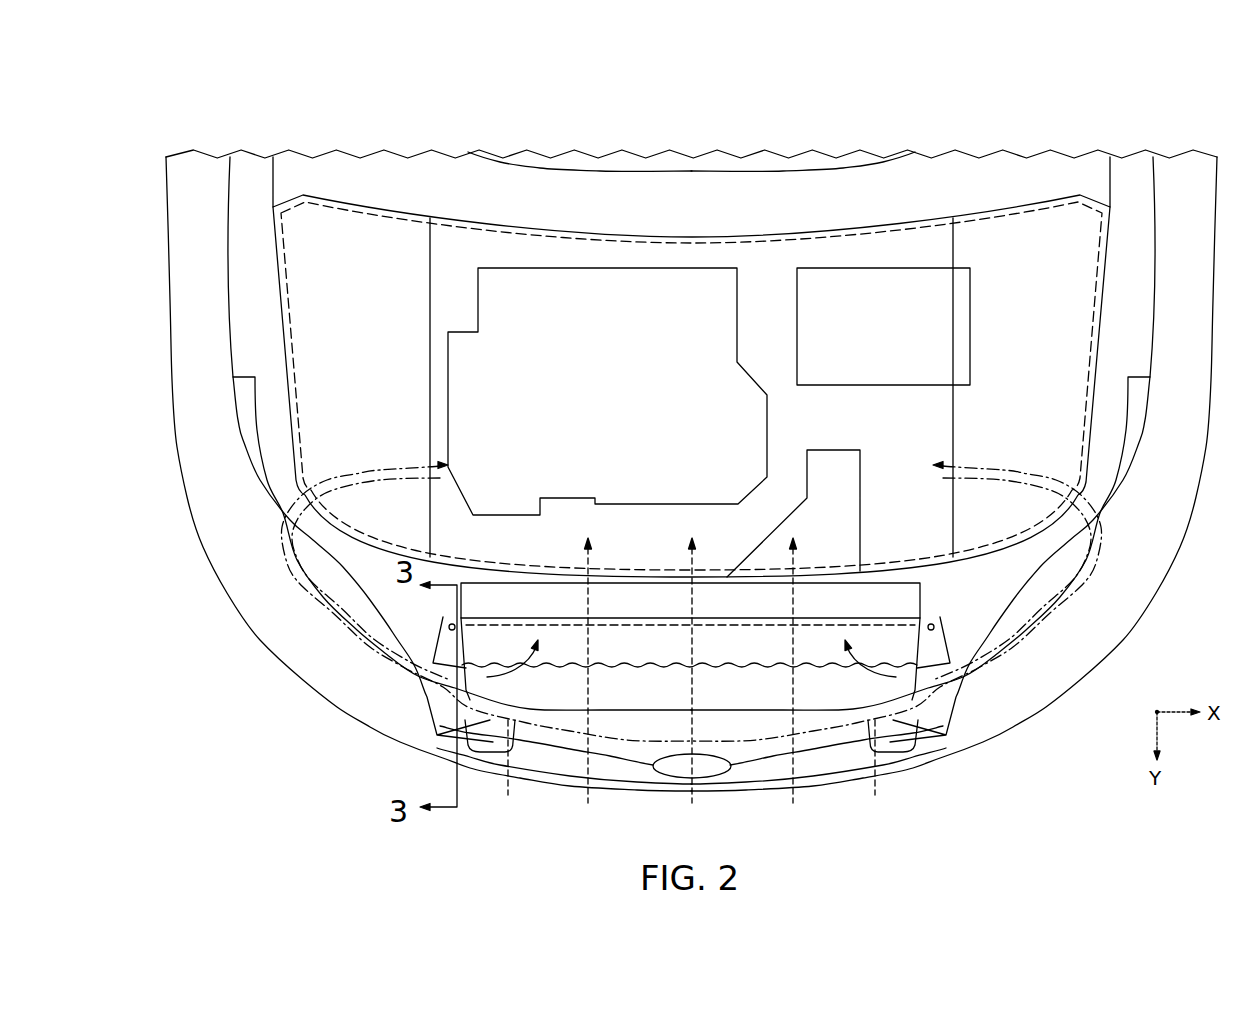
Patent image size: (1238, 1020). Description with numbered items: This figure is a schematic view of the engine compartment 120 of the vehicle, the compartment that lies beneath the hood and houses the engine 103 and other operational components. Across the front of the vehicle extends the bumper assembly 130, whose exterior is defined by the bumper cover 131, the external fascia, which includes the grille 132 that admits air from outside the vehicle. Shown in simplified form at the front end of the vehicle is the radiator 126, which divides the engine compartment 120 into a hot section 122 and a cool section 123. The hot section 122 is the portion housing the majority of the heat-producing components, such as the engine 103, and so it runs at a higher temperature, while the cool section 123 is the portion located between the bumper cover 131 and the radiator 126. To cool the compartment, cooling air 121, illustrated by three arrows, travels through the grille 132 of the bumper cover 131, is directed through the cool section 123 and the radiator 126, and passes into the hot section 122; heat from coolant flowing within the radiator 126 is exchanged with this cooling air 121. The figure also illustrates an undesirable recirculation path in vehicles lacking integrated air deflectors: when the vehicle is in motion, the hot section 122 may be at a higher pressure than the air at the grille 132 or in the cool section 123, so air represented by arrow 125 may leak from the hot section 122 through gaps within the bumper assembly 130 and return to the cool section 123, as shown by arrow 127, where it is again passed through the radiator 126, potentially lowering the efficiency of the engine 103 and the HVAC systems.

The engine 103 is at (440, 343).
The engine compartment 120 is at (148, 152).
The cooling air 121 is at (597, 814).
The hot section 122 is at (1098, 312).
The cool section 123 is at (833, 720).
The arrow representing leaking air 125 is at (395, 482).
The radiator 126 is at (912, 582).
The arrow representing recirculated air 127 is at (343, 472).
The bumper assembly 130 is at (980, 762).
The bumper cover 131 is at (1053, 705).
The grille 132 is at (862, 785).